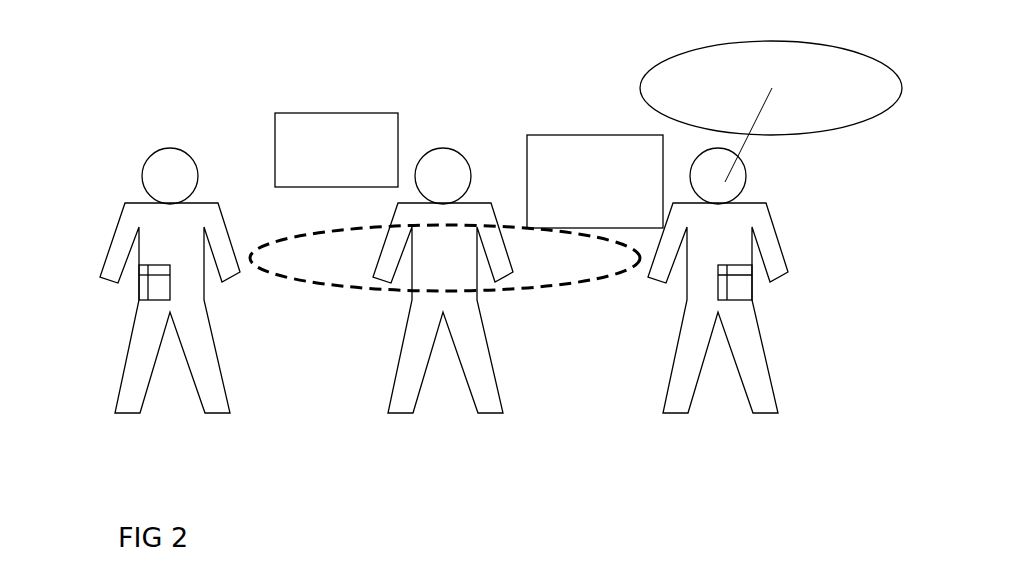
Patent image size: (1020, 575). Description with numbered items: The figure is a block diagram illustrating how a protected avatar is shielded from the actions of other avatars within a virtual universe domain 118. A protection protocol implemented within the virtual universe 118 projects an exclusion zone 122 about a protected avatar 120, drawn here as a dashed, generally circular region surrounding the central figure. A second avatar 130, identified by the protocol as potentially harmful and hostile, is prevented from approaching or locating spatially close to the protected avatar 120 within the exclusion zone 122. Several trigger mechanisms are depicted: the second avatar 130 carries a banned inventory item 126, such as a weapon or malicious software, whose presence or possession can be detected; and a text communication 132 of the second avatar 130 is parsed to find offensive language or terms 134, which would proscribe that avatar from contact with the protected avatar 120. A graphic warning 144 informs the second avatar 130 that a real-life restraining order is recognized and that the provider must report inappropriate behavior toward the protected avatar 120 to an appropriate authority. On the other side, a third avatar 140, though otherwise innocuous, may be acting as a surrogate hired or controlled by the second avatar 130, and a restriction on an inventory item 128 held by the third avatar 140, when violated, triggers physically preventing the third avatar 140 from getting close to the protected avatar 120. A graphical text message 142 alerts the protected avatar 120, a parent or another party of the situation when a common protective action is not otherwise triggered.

The virtual universe domain 118 is at (320, 482).
The protected avatar 120 is at (392, 414).
The exclusion zone 122 is at (370, 287).
The banned inventory item 126 is at (753, 282).
The inventory item 128 is at (139, 283).
The second avatar 130 is at (680, 413).
The text communication 132 is at (678, 57).
The offensive language or terms 134 is at (817, 95).
The third avatar 140 is at (120, 413).
The graphical text message 142 is at (292, 113).
The graphic warning 144 is at (555, 135).